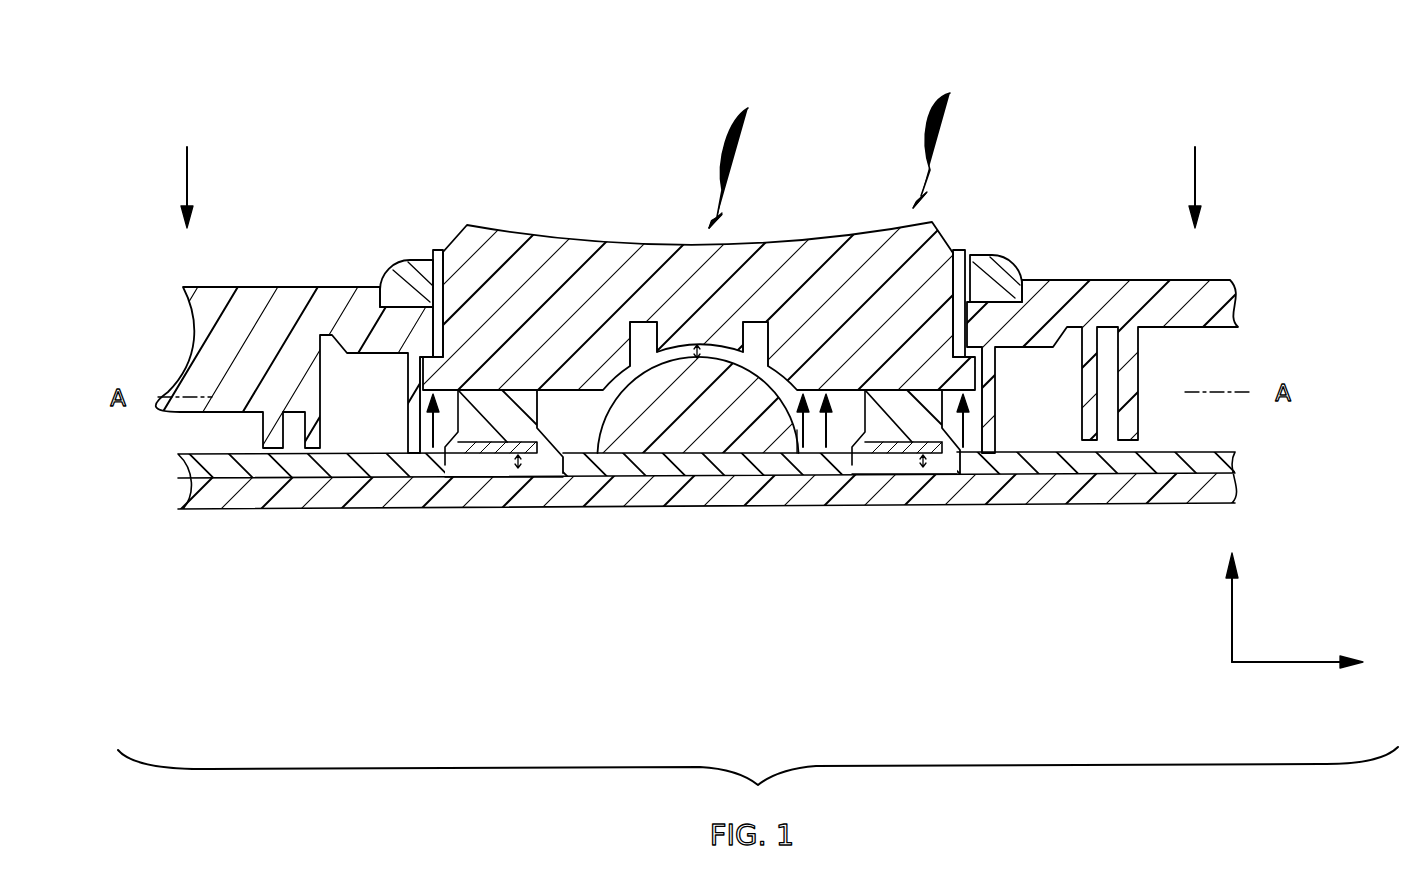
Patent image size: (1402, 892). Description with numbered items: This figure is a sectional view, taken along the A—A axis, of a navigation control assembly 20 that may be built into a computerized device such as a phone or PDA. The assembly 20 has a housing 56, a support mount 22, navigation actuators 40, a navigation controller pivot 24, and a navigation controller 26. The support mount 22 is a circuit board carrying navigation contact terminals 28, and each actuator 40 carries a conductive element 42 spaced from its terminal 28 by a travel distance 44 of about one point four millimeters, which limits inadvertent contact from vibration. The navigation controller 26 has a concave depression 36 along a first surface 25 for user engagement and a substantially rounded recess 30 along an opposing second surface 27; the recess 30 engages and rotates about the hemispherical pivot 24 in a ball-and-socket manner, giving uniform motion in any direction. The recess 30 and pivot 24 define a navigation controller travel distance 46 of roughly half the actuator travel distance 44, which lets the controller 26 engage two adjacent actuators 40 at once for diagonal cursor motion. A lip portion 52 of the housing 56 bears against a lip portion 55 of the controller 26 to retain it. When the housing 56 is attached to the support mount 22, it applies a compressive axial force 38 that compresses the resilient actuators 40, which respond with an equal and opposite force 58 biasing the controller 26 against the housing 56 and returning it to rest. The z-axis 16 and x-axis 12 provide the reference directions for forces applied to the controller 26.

The x-axis 12 is at (1338, 662).
The z-axis 16 is at (1232, 653).
The navigation control assembly 20 is at (948, 140).
The support mount 22 is at (208, 509).
The navigation controller pivot 24 is at (723, 437).
The first surface 25 is at (745, 158).
The navigation controller 26 is at (450, 237).
The second surface 27 is at (797, 432).
The navigation contact terminals 28 is at (514, 468).
The rounded recess 30 is at (748, 325).
The concave depression 36 is at (537, 233).
The compressive axial force 38 is at (187, 170).
The navigation actuators 40 is at (447, 456).
The conductive element 42 is at (487, 445).
The travel distance 44 is at (556, 462).
The navigation controller travel distance 46 is at (692, 344).
The lip portion 52 is at (380, 302).
The lip portion 55 is at (430, 377).
The housing 56 is at (277, 286).
The equal and opposite force 58 is at (428, 434).